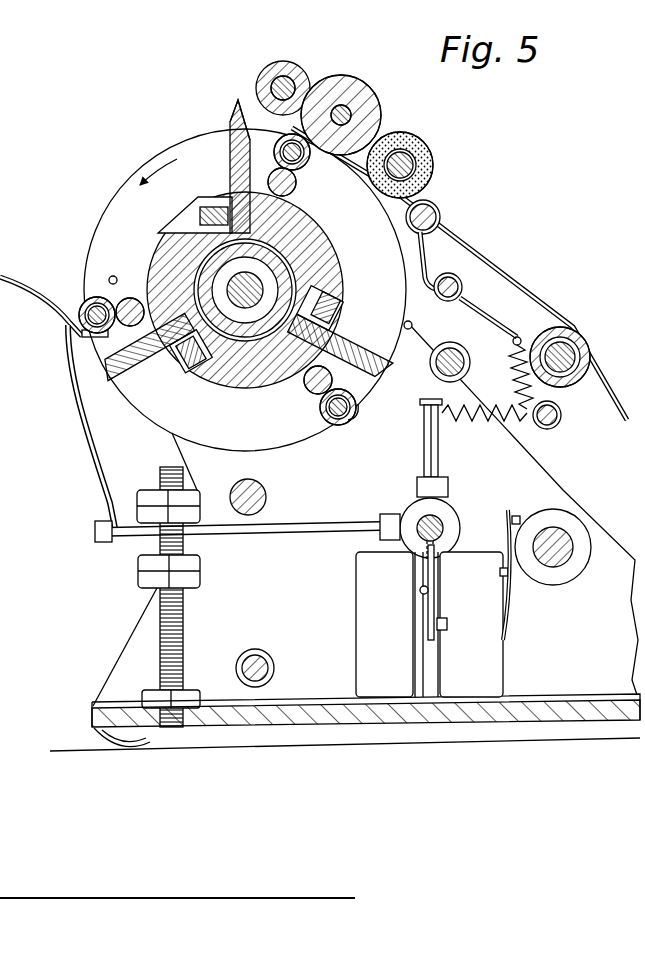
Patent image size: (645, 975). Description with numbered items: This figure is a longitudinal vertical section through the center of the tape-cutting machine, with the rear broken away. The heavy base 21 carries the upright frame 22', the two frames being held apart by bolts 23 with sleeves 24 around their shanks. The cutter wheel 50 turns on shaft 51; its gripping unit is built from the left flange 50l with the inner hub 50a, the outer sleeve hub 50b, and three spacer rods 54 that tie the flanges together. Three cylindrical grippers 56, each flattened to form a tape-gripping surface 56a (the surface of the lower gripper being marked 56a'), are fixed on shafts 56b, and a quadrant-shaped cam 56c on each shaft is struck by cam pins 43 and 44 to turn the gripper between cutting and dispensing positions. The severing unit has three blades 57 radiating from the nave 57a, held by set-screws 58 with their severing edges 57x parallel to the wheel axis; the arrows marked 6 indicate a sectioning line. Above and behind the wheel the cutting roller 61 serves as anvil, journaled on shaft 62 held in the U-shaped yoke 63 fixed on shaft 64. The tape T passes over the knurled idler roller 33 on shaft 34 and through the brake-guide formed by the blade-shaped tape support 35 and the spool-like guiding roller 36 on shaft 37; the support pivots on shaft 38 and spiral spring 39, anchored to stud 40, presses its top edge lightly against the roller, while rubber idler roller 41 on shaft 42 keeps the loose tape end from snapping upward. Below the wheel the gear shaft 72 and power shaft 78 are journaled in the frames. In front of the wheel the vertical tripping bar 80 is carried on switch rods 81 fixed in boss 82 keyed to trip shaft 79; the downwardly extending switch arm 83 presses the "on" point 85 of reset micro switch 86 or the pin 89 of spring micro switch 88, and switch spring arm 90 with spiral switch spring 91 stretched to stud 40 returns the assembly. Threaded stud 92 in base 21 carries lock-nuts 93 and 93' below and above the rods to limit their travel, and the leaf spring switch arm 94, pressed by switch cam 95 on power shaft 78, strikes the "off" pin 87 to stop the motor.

The tape T is at (492, 292).
The tape feed direction 6 is at (137, 160).
The base 21 is at (404, 716).
The upright frame 22' is at (114, 647).
The bolts 23 is at (436, 366).
The sleeves 24 is at (444, 354).
The idler roller 33 is at (552, 336).
The horizontal shaft 34 is at (562, 370).
The tape support 35 is at (425, 252).
The guiding roller 36 is at (432, 206).
The shaft 37 is at (440, 217).
The horizontal shaft 38 is at (442, 296).
The spiral spring 39 is at (510, 360).
The stud 40 is at (556, 422).
The horizontal idler roller 41 is at (404, 142).
The shaft 42 is at (406, 166).
The cam pin 43 is at (110, 278).
The cam pin 44 is at (408, 322).
The cutter wheel 50 is at (108, 190).
The inner hub 50a is at (232, 272).
The outer hub 50b is at (200, 234).
The left flange 50l is at (106, 222).
The shaft 51 is at (240, 290).
The spacer rods 54 is at (294, 186).
The grippers 56 is at (282, 140).
The tape-gripping surface 56a is at (64, 348).
The roller guide 56a' is at (382, 404).
The shaft 56b is at (296, 166).
The cam 56c is at (84, 304).
The blades 57 is at (238, 166).
The nave 57a is at (250, 386).
The severing edges 57x is at (238, 118).
The set-screws 58 is at (220, 210).
The cutting roller 61 is at (340, 84).
The shaft 62 is at (348, 108).
The yoke 63 is at (280, 78).
The shaft 64 is at (290, 86).
The gear shaft 72 is at (264, 498).
The power shaft 78 is at (566, 550).
The trip shaft 79 is at (440, 526).
The tripping bar 80 is at (74, 392).
The switch rods 81 is at (288, 540).
The boss 82 is at (414, 512).
The switch arm 83 is at (432, 612).
The "on" point 85 is at (446, 628).
The reset micro switch 86 is at (484, 666).
The "off" pin 87 is at (500, 570).
The spring micro switch 88 is at (360, 666).
The pin 89 is at (422, 590).
The switch spring arm 90 is at (428, 458).
The switch spring 91 is at (502, 416).
The threaded stud 92 is at (185, 626).
The lock-nuts 93 is at (146, 631).
The lock-nuts 93' is at (159, 495).
The leaf spring switch arm 94 is at (514, 520).
The switch cam 95 is at (522, 522).